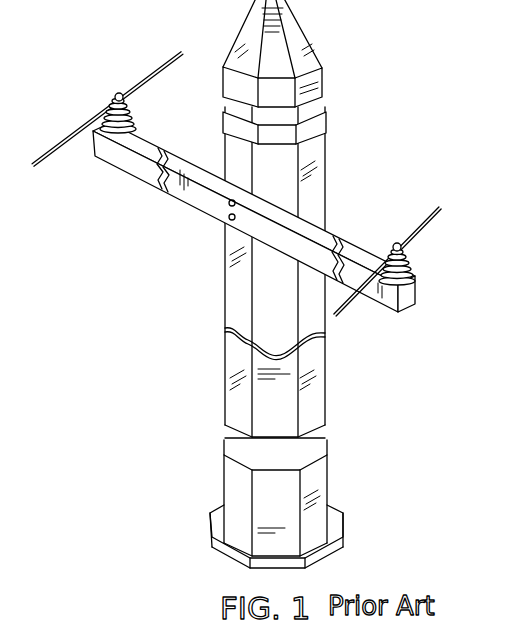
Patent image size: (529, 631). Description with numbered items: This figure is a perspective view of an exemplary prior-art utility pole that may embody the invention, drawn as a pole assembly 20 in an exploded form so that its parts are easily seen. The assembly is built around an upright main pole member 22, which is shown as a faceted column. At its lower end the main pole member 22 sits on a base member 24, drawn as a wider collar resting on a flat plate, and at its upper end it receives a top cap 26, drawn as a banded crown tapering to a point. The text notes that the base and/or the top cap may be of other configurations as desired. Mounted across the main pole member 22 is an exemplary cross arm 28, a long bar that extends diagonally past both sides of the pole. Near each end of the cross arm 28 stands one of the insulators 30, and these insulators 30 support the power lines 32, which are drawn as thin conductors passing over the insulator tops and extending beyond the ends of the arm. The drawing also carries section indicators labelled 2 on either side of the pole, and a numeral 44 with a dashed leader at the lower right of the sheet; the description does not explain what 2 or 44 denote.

The pole assembly 20 is at (273, 315).
The main pole member 22 is at (327, 188).
The base member 24 is at (352, 503).
The top cap 26 is at (315, 50).
The cross arm 28 is at (182, 183).
The insulators 30 is at (112, 108).
The power lines 32 is at (73, 131).
The section line for FIG. 2 is at (271, 342).
The reference element 44 is at (514, 630).